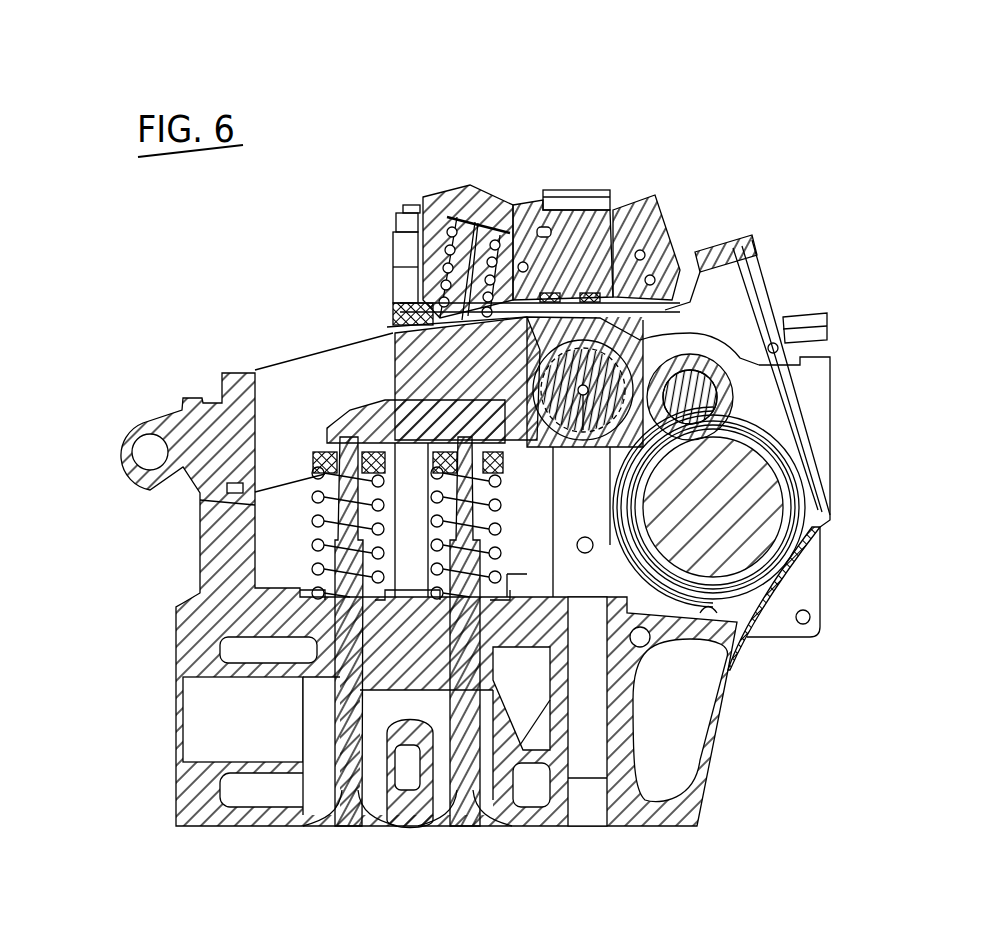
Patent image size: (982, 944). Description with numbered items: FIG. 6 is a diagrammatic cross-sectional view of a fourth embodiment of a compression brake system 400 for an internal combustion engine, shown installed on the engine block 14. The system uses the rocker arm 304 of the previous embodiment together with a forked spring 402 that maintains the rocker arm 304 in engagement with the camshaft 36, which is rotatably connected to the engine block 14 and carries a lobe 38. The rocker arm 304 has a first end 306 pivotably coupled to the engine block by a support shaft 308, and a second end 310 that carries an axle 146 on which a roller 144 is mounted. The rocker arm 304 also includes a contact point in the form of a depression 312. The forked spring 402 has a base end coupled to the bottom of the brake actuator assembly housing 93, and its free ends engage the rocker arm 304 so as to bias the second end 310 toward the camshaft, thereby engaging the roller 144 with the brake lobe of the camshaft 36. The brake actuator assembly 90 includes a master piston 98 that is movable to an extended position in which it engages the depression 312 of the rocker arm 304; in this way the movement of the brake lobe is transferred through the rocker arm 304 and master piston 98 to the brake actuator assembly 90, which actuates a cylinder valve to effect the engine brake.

The engine block 14 is at (818, 452).
The camshaft 36 is at (702, 577).
The lobe 38 is at (752, 553).
The brake actuator assembly 90 is at (535, 203).
The brake actuator assembly housing 93 is at (568, 228).
The master piston 98 is at (652, 320).
The roller 144 is at (728, 408).
The axle 146 is at (707, 390).
The rocker arm 304 is at (608, 433).
The first end 306 is at (533, 377).
The support shaft 308 is at (565, 405).
The second end 310 is at (720, 348).
The depression 312 is at (662, 330).
The compression brake system 400 is at (745, 158).
The forked spring 402 is at (705, 300).